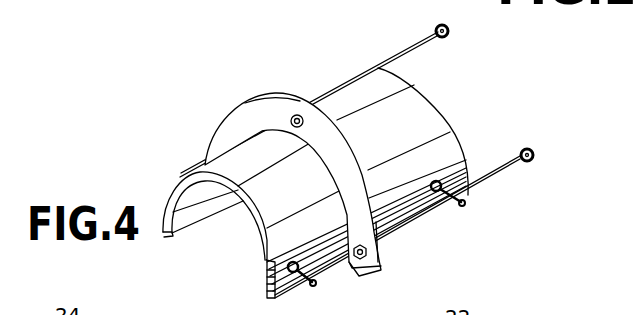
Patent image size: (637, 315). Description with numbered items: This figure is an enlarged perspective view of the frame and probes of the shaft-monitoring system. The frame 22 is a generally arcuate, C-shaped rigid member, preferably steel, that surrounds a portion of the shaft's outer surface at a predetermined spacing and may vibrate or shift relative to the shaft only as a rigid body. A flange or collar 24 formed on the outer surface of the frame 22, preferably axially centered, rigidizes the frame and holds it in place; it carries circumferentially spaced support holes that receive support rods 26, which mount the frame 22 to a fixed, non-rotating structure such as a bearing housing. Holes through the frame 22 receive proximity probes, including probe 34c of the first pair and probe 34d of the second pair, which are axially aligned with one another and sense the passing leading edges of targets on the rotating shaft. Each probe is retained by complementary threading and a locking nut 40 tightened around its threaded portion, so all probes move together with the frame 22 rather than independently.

The frame 22 is at (212, 156).
The collar 24 is at (238, 107).
The support rod 26 is at (399, 53).
The probe 34c is at (446, 204).
The probe 34d is at (320, 280).
The locking nut 40 is at (268, 266).